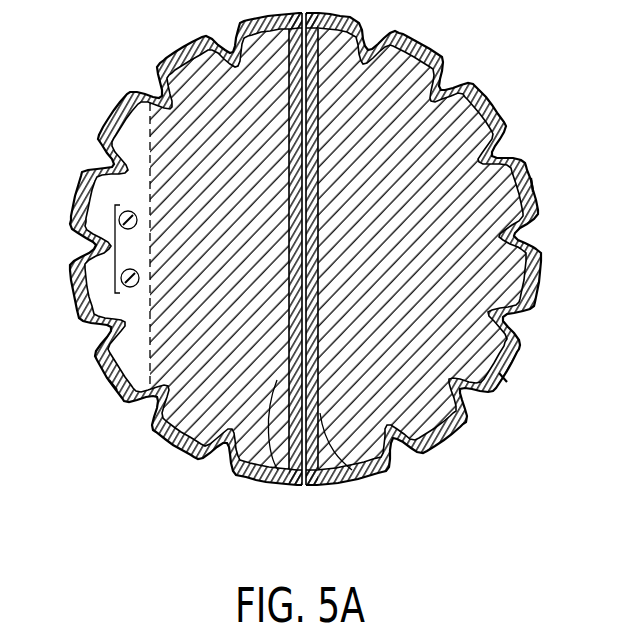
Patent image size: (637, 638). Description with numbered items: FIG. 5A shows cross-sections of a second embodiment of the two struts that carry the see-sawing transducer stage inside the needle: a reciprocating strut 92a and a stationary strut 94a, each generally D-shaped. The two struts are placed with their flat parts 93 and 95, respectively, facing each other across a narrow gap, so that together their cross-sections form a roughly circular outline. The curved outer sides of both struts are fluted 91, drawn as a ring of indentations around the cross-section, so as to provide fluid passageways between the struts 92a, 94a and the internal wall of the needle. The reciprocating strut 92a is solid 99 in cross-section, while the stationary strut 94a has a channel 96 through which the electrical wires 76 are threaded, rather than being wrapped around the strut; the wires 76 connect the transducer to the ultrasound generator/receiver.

The fluting 91 is at (164, 78).
The channel 96 is at (104, 148).
The reciprocating strut 92a is at (534, 186).
The solid 99 is at (478, 352).
The stationary strut 94a is at (111, 387).
The electrical wires 76 is at (112, 250).
The flat part 95 is at (268, 470).
The flat part 93 is at (352, 470).